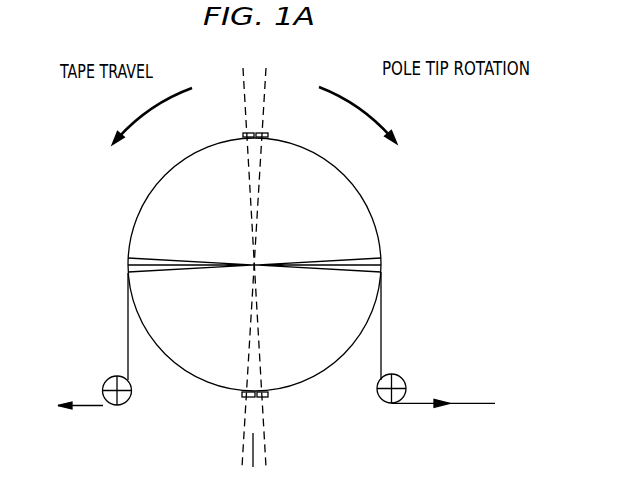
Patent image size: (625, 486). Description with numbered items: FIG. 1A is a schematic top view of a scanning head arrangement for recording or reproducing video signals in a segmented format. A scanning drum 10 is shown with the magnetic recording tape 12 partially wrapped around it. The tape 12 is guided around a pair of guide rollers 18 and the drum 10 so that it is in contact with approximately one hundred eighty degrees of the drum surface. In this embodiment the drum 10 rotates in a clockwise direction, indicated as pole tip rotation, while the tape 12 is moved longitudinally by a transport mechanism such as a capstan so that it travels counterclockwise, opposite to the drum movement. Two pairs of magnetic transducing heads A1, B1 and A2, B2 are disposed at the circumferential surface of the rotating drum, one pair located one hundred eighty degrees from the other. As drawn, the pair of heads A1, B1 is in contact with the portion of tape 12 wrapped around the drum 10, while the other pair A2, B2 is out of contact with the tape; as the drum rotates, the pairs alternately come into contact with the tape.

The scanning drum 10 is at (370, 195).
The magnetic recording tape 12 is at (382, 305).
The guide rollers 18 is at (113, 376).
The magnetic transducing head A1 is at (277, 110).
The magnetic transducing head B1 is at (235, 110).
The magnetic transducing head A2 is at (236, 407).
The magnetic transducing head B2 is at (273, 407).